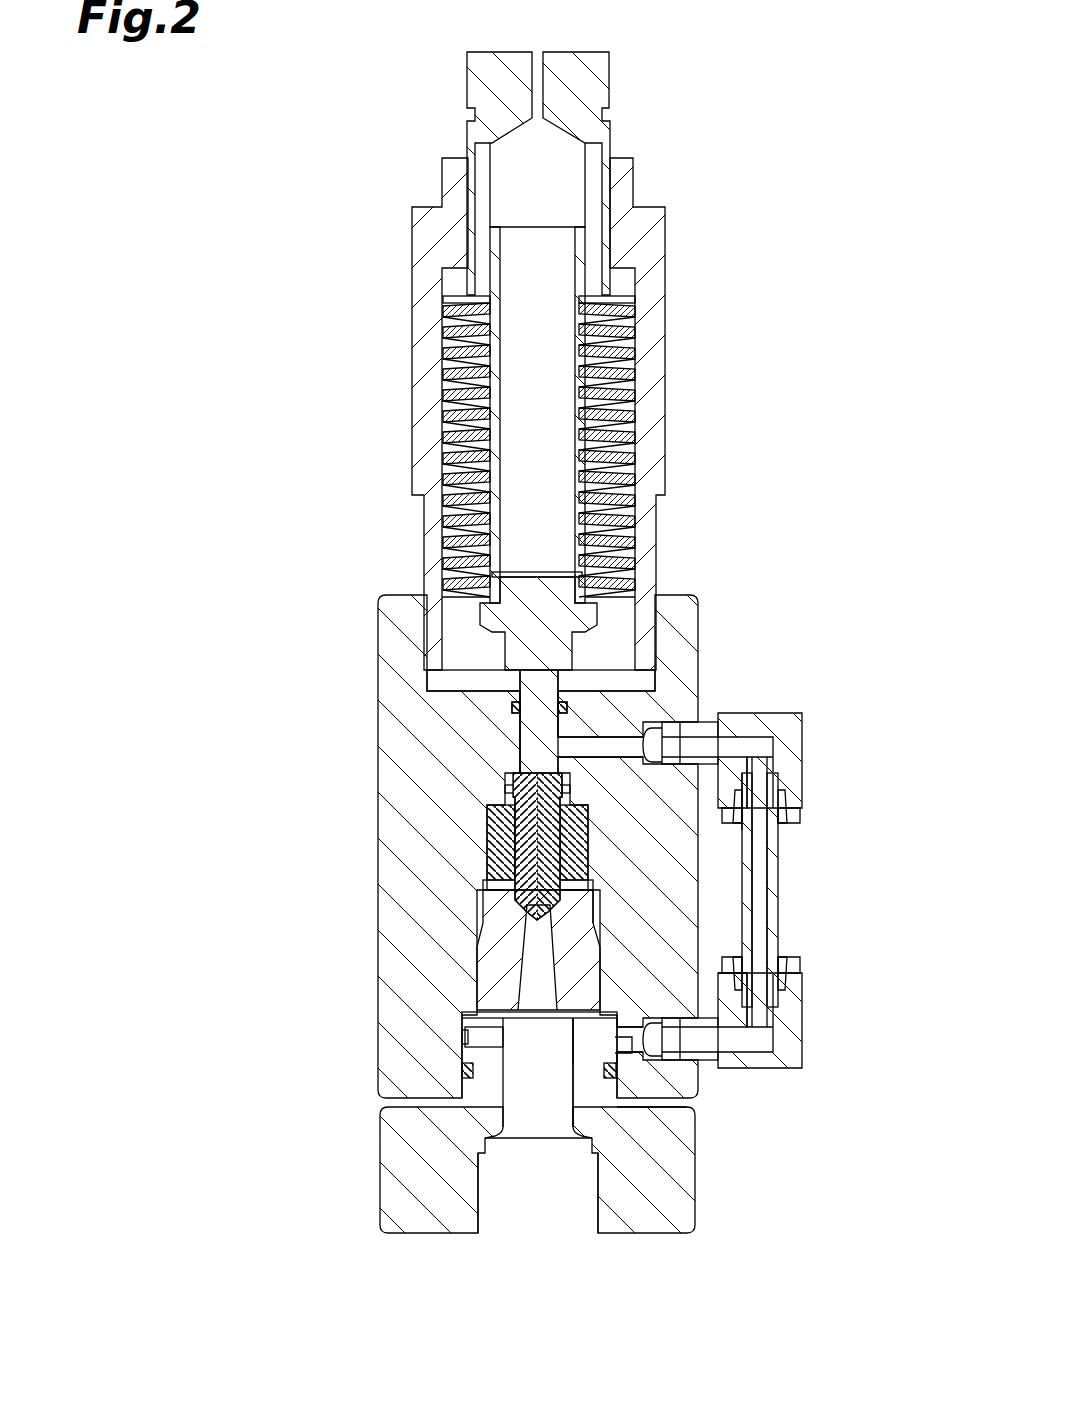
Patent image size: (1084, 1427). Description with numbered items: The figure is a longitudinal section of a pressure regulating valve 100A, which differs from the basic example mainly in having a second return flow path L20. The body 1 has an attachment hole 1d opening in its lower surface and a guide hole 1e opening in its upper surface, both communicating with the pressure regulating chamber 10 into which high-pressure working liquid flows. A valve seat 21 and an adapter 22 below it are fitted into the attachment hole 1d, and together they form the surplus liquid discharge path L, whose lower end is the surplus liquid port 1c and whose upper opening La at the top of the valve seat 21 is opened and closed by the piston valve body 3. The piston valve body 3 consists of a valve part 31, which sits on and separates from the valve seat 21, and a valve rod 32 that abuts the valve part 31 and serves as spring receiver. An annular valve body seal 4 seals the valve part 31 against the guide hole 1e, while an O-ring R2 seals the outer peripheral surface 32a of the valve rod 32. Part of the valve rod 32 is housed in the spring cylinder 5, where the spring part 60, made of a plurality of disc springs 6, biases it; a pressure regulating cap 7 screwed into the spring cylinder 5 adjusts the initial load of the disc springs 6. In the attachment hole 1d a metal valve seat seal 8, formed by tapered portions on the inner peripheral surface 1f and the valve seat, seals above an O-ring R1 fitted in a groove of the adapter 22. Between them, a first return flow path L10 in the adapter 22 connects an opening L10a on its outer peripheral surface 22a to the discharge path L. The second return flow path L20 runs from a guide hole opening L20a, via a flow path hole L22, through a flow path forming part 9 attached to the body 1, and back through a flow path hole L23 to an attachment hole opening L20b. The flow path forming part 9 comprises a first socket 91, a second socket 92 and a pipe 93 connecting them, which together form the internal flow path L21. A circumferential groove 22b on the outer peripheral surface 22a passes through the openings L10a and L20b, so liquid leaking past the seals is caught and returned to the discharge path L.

The pressure regulating valve 100A is at (920, 13).
The body 1 is at (684, 588).
The surplus liquid port 1c is at (563, 1238).
The attachment hole 1d is at (483, 1097).
The guide hole 1e is at (548, 700).
The inner peripheral surface of the attachment hole 1f is at (632, 1045).
The piston valve body 3 is at (445, 466).
The valve part 31 is at (512, 790).
The valve rod 32 is at (518, 745).
The outer peripheral surface of the valve rod 32a is at (508, 705).
The valve body seal 4 is at (490, 827).
The spring cylinder 5 is at (650, 325).
The disc springs 6 is at (443, 360).
The spring part 60 is at (435, 326).
The pressure regulating cap 7 is at (595, 78).
The valve seat seal 8 is at (455, 941).
The flow path forming part 9 is at (754, 874).
The first socket 91 is at (741, 744).
The second socket 92 is at (795, 1040).
The pipe 93 is at (785, 815).
The pressure regulating chamber 10 is at (480, 905).
The valve seat 21 is at (490, 988).
The adapter 22 is at (497, 1196).
The outer peripheral surface of the adapter 22a is at (607, 1065).
The groove 22b is at (462, 1046).
The surplus liquid discharge path L is at (532, 1113).
The opening of the surplus liquid discharge path La is at (517, 858).
The first return flow path L10 is at (482, 1042).
The opening of the first return flow path L10a is at (463, 1050).
The second return flow path L20 is at (754, 892).
The guide hole opening L20a is at (590, 782).
The attachment hole opening L20b is at (600, 1040).
The flow path L21 is at (765, 945).
The flow path hole L22 is at (608, 740).
The flow path hole L23 is at (617, 1082).
The O-ring R1 is at (612, 1070).
The O-ring R2 is at (565, 708).